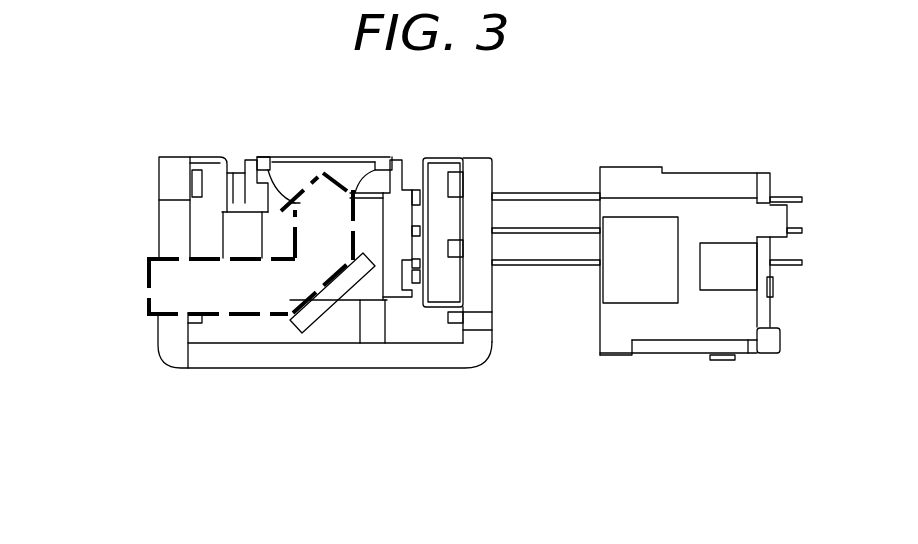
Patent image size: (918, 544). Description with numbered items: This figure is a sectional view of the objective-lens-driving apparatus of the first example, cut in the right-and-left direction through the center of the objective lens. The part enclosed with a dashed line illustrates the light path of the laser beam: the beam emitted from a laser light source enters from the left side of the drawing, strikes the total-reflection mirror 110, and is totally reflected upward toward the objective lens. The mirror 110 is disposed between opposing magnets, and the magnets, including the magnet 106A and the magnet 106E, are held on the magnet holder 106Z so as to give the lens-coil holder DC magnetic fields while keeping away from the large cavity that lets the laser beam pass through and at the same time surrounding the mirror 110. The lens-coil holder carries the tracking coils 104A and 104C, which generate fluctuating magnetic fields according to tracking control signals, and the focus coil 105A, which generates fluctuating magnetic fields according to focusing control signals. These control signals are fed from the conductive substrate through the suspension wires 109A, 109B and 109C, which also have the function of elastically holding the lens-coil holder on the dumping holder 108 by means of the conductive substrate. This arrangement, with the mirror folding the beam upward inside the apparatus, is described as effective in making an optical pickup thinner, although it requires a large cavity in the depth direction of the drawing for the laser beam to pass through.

The tracking coil 104A is at (247, 193).
The tracking coil 104C is at (407, 187).
The focus coil 105A is at (372, 238).
The magnet 106A is at (210, 228).
The magnet holder 106Z is at (180, 362).
The magnet 106E is at (442, 293).
The dumping holder 108 is at (732, 180).
The suspension wire 109A is at (567, 193).
The suspension wire 109B is at (537, 234).
The suspension wire 109C is at (578, 266).
The total-reflection mirror 110 is at (313, 322).